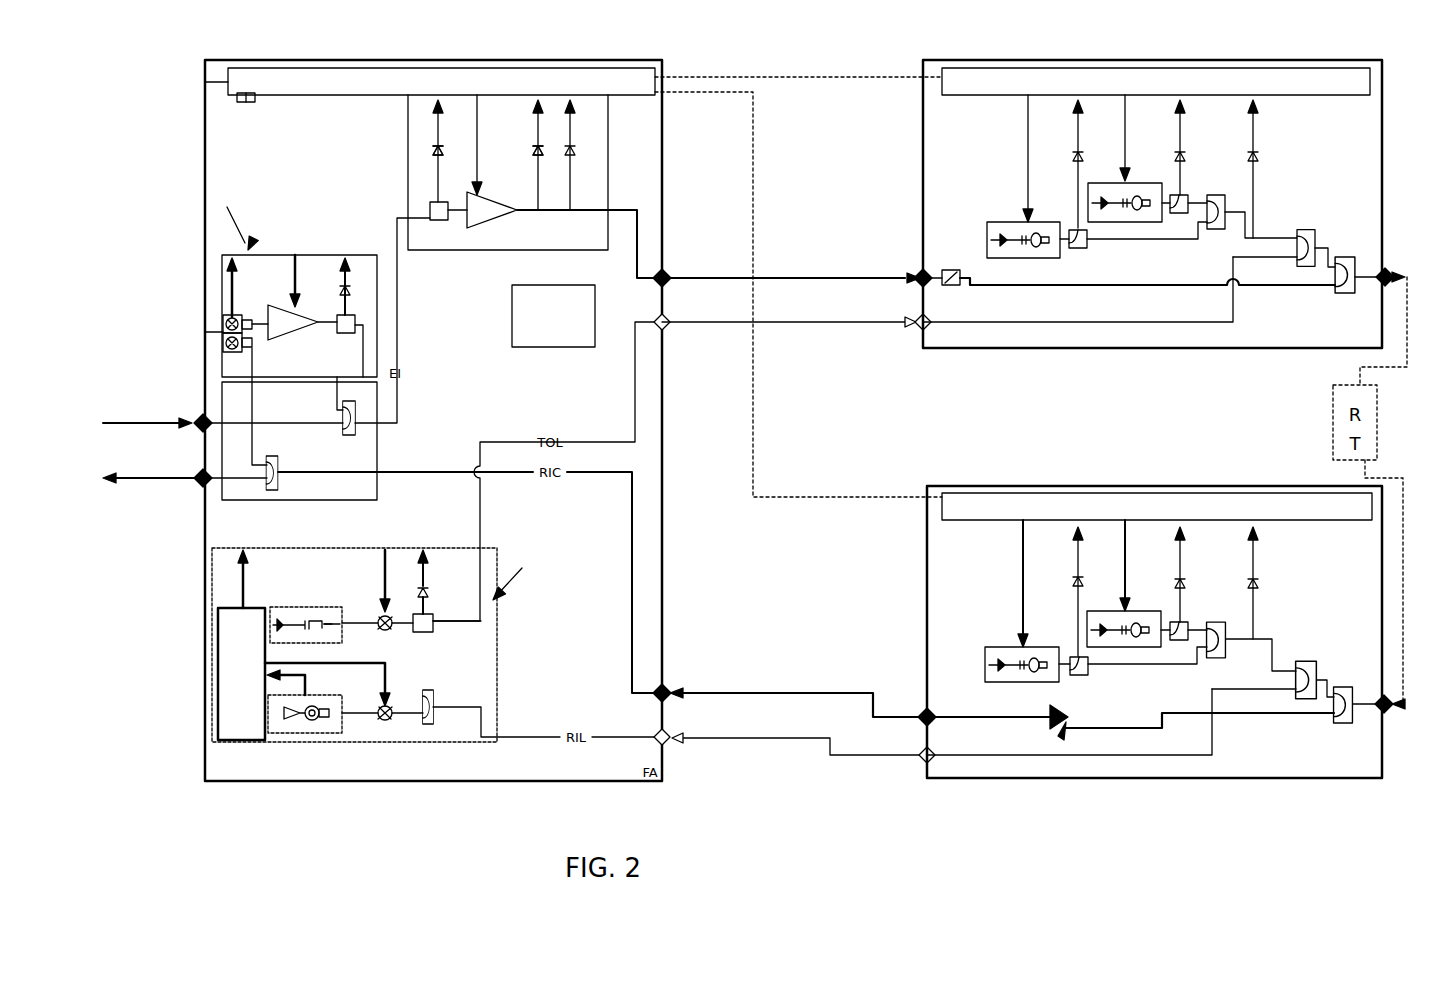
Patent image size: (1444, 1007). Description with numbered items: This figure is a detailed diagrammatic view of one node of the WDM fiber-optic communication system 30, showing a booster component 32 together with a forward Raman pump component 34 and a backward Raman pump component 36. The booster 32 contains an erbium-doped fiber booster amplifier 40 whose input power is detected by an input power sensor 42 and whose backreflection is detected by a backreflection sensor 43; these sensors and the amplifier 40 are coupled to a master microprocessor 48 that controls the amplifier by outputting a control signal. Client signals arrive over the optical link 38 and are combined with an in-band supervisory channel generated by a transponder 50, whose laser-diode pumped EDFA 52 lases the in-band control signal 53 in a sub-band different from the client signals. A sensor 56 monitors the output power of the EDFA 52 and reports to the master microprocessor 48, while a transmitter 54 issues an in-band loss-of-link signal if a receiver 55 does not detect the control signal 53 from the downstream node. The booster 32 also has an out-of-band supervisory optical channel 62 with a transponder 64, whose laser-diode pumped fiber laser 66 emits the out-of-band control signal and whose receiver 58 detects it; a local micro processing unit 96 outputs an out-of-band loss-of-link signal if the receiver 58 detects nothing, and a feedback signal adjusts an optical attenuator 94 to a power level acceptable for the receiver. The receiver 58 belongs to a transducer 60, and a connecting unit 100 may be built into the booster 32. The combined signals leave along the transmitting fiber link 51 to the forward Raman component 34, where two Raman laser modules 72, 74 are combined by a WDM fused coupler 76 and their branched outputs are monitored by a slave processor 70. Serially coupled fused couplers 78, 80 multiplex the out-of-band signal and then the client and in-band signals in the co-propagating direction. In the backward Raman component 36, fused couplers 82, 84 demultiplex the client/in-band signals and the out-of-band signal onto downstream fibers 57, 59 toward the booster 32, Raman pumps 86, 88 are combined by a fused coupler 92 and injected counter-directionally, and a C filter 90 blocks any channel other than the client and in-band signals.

The WDM fiber-optic communication system 30 is at (779, 543).
The booster component 32 is at (186, 155).
The forward Raman pump component 34 is at (1005, 363).
The backward Raman pump component 36 is at (1013, 477).
The optical link 38 is at (167, 413).
The erbium-doped fiber booster amplifier 40 is at (497, 213).
The input power sensor 42 is at (437, 168).
The backreflection sensor 43 is at (537, 148).
The master microprocessor 48 is at (509, 93).
The transponder 50 is at (291, 318).
The transmitting fiber link 51 is at (820, 280).
The laser-diode pumped EDFA 52 is at (292, 318).
The IB control signal 53 is at (367, 360).
The transmitter 54 is at (223, 317).
The receiver 55 is at (223, 340).
The sensor 56 is at (346, 282).
The downstream fiber 57 is at (800, 313).
The receiver 58 is at (268, 713).
The downstream fiber 59 is at (827, 738).
The transducer 60 is at (355, 428).
The out-of-band supervisory optical channel 62 is at (464, 667).
The transponder 64 is at (284, 603).
The laser-diode pumped fiber laser 66 is at (328, 625).
The slave processor 70 is at (1197, 94).
The Raman laser module 72 is at (1036, 268).
The Raman laser module 74 is at (1143, 224).
The WDM fused coupler 76 is at (1217, 230).
The fused WDM coupler 78 is at (1312, 232).
The WDM fused coupler 80 is at (1350, 258).
The WDM fused coupler 82 is at (1355, 687).
The WDM fused coupler 84 is at (1310, 661).
The Raman pump 86 is at (1000, 696).
The Raman pump 88 is at (1116, 657).
The C filter 90 is at (1053, 722).
The fused coupler 92 is at (1222, 622).
The optical attenuator 94 is at (387, 718).
The local micro processing unit 96 is at (224, 717).
The connecting unit 100 is at (535, 327).